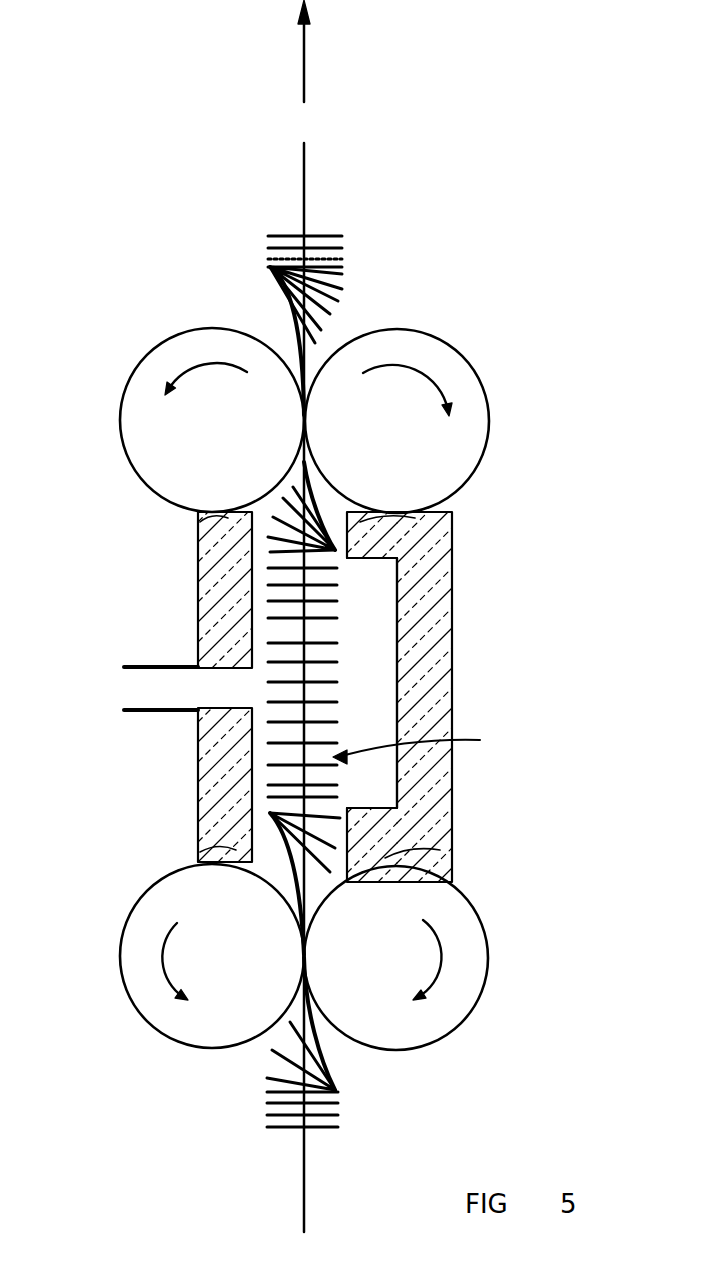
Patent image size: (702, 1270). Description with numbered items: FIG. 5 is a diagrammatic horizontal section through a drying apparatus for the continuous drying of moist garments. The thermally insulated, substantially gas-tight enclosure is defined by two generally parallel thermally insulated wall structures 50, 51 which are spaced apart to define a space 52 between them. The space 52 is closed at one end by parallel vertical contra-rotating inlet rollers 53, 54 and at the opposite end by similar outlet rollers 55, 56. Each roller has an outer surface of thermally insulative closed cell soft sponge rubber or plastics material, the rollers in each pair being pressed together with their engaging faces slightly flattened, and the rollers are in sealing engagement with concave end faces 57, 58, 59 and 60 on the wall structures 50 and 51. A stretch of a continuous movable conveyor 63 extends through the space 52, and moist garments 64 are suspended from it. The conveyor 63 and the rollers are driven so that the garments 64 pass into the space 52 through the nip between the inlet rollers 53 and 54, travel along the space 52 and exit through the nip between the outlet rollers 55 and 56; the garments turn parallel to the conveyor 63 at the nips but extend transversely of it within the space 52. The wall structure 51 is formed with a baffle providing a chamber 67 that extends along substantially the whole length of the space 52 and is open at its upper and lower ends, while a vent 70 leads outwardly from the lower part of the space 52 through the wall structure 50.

The thermally insulated wall structure 50 is at (212, 668).
The thermally insulated wall structure 51 is at (450, 773).
The space 52 is at (424, 744).
The inlet roller 53 is at (202, 1050).
The inlet roller 54 is at (447, 1033).
The outlet roller 55 is at (152, 352).
The outlet roller 56 is at (470, 366).
The concave end face 57 is at (205, 835).
The concave end face 58 is at (417, 850).
The concave end face 59 is at (220, 524).
The concave end face 60 is at (417, 517).
The continuous movable conveyor 63 is at (303, 176).
The moist garments 64 is at (268, 571).
The chamber 67 is at (378, 622).
The vent 70 is at (143, 684).